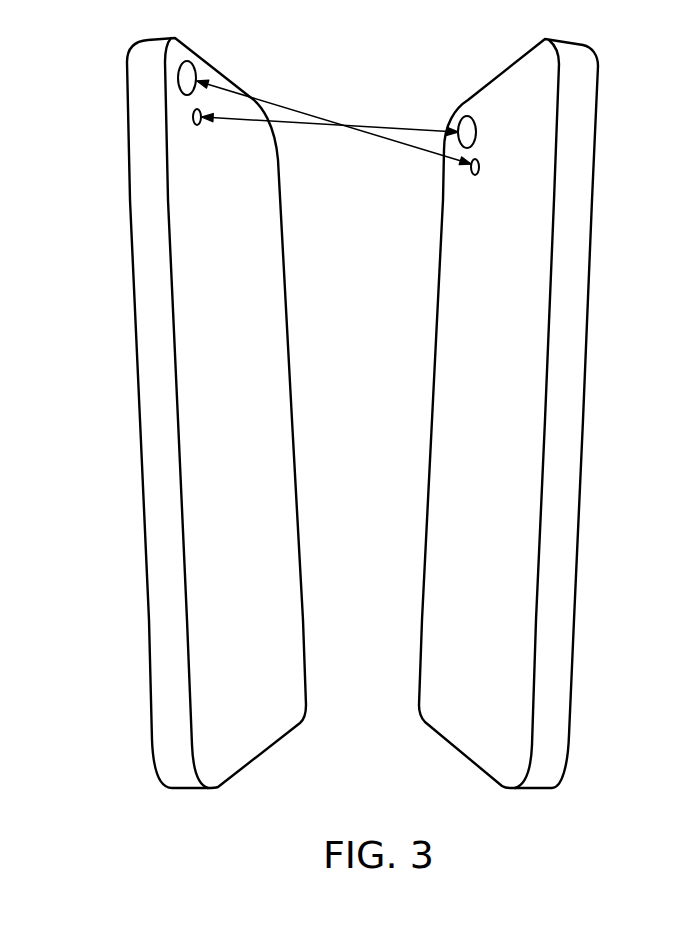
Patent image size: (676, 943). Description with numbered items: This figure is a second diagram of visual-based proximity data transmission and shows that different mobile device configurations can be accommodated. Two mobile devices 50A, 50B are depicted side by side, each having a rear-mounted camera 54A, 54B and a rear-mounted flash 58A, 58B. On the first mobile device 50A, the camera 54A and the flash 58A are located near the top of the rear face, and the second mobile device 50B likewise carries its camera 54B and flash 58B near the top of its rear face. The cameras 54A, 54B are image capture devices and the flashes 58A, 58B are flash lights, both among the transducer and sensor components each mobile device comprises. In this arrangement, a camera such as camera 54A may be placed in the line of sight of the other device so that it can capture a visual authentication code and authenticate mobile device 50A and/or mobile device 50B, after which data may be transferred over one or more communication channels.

The mobile device 50A is at (154, 482).
The mobile device 50B is at (571, 482).
The image capture device/camera 54A is at (178, 80).
The image capture device/camera 54B is at (460, 121).
The flash 58A is at (199, 125).
The flash 58B is at (476, 175).